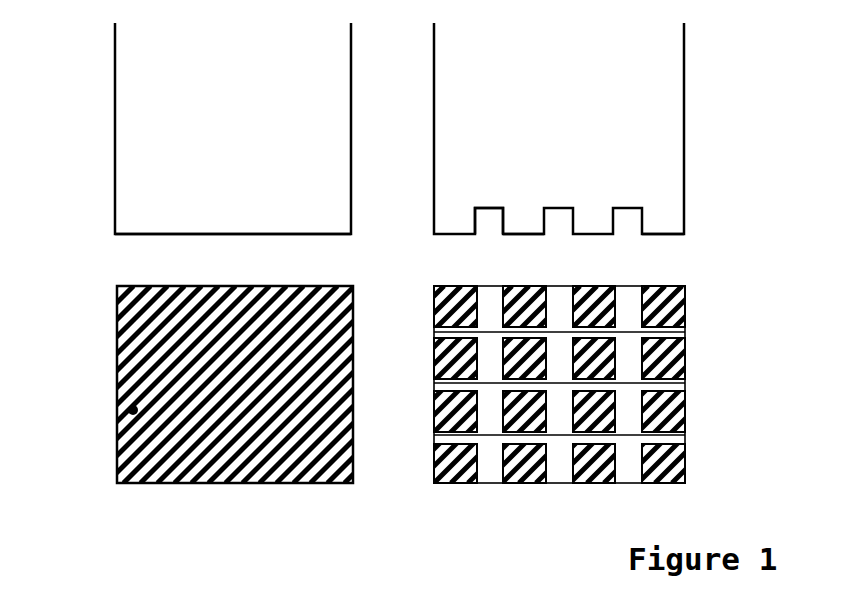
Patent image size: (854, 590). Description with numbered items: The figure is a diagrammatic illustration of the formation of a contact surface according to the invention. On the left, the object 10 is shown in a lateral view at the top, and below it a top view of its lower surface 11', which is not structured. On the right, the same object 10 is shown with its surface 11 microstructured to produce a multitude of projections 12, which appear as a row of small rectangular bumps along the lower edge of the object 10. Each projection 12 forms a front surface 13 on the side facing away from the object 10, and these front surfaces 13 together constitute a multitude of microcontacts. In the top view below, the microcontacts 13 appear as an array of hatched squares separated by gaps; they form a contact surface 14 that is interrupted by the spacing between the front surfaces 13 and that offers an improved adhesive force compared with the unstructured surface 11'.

The object 10 is at (270, 108).
The surface 11 is at (457, 240).
The lower surface 11' is at (279, 358).
The projection 12 is at (670, 219).
The front surface 13 is at (663, 237).
The contact surface 14 is at (743, 392).